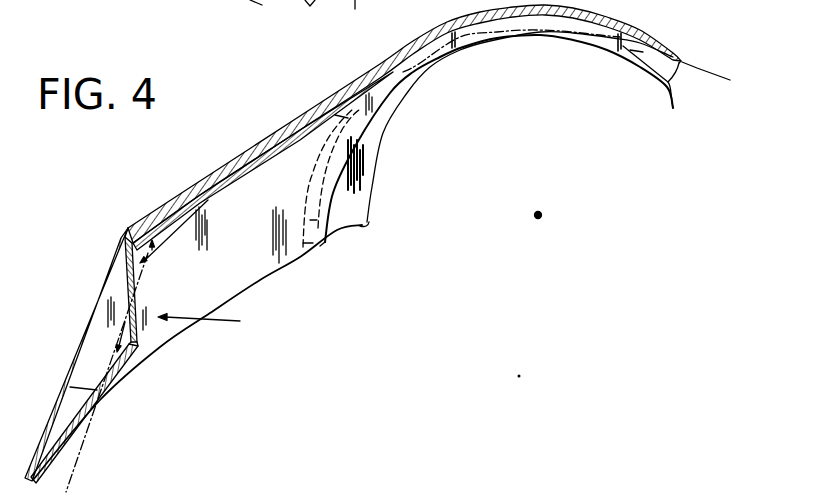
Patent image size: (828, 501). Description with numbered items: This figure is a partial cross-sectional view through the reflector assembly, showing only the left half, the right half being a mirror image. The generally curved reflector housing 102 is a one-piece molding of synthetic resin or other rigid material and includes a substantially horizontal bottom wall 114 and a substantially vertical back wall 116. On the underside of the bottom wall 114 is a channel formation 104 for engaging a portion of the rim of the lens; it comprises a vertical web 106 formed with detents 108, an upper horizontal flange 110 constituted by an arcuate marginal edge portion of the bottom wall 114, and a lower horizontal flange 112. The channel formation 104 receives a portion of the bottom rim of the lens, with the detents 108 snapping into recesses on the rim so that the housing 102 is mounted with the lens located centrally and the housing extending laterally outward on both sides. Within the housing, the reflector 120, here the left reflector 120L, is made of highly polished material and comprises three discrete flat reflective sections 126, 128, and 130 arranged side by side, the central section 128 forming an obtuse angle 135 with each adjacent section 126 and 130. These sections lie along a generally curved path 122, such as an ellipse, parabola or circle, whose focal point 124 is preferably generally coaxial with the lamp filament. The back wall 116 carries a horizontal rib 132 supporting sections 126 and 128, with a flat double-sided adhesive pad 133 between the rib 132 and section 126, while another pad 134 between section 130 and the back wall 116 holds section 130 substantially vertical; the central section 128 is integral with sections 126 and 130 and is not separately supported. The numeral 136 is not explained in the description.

The reflector housing 102 is at (622, 12).
The channel formation 104 is at (315, 265).
The vertical web 106 is at (365, 172).
The detents 108 is at (321, 230).
The upper horizontal flange 110 is at (368, 224).
The lower horizontal flange 112 is at (375, 138).
The bottom wall 114 is at (250, 246).
The back wall 116 is at (303, 113).
The reflector 120 is at (125, 231).
The left reflector 120L is at (224, 326).
The curve 122 is at (72, 480).
The focal point 124 is at (541, 215).
The reflective section 126 is at (124, 382).
The central reflective section 128 is at (137, 297).
The reflective section 130 is at (263, 158).
The horizontal rib 132 is at (107, 258).
The double-sided adhesive pad 133 is at (143, 345).
The pad 134 is at (214, 186).
The obtuse angle 135 is at (150, 257).
The channel 136 is at (133, 347).